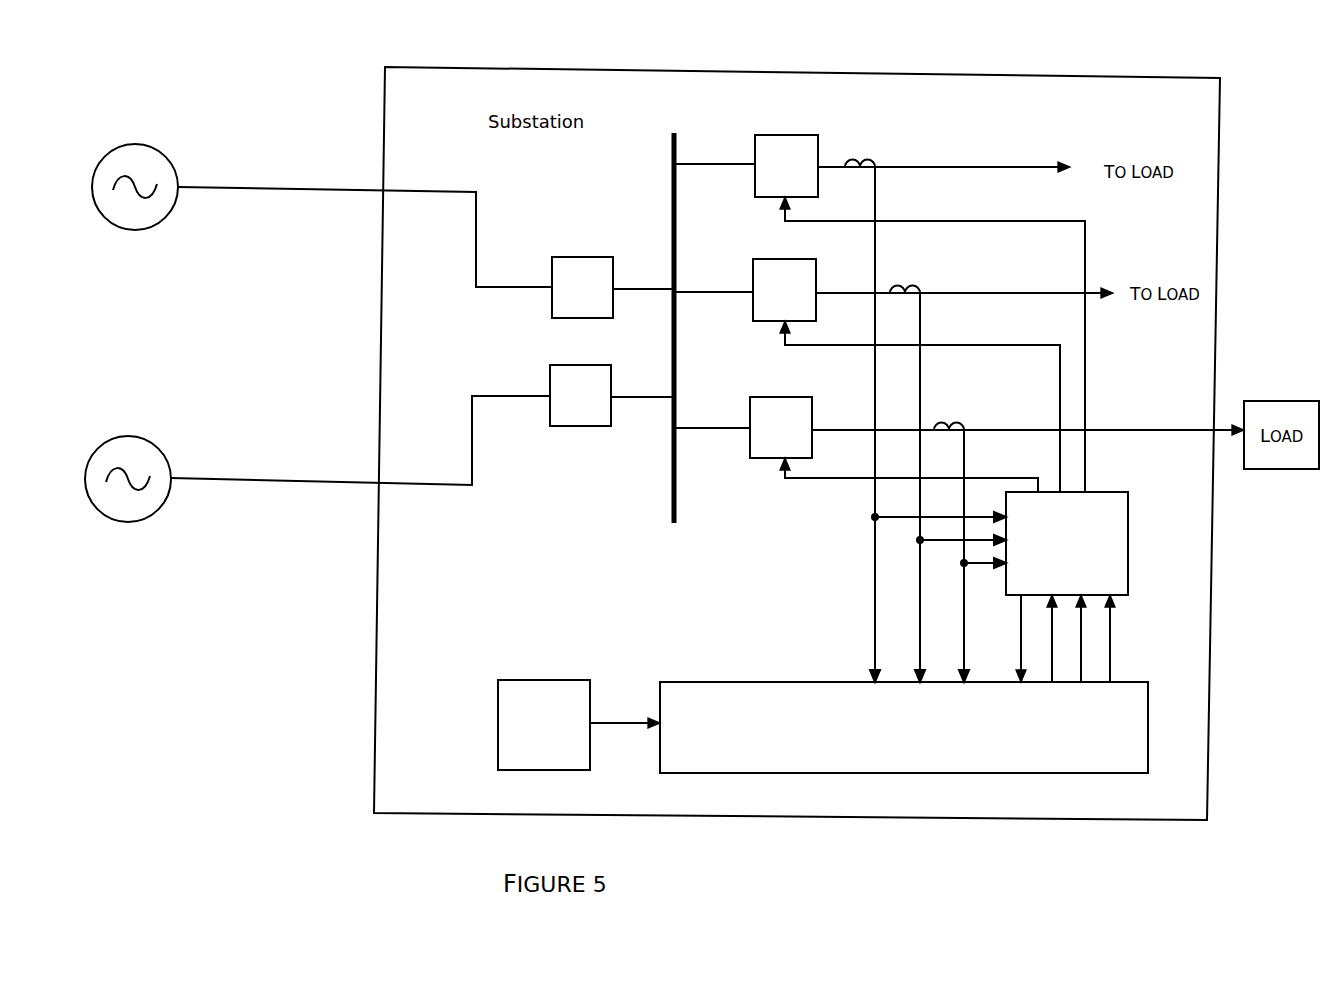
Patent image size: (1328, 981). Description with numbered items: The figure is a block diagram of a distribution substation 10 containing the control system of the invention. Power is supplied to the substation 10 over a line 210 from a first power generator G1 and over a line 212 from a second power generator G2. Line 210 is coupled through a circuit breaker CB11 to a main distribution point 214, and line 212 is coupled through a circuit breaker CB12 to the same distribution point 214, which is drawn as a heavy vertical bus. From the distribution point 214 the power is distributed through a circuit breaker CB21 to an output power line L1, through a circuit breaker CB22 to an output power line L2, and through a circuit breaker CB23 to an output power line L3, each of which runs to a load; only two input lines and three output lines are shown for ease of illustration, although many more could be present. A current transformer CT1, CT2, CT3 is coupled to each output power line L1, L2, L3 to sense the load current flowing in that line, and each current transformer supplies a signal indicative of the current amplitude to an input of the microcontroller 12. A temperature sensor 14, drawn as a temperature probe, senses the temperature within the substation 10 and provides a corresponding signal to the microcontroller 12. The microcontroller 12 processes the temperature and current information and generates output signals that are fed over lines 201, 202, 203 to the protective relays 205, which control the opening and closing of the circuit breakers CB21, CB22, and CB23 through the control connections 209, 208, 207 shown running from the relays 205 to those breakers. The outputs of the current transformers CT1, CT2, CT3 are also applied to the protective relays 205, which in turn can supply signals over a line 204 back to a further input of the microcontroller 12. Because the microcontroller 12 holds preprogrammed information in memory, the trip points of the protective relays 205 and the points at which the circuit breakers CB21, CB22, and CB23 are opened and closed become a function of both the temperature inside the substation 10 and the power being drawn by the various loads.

The distribution substation 10 is at (680, 66).
The microcontroller 12 is at (761, 776).
The temperature sensor 14 is at (538, 690).
The line 201 is at (1110, 622).
The line 202 is at (1081, 647).
The line 203 is at (1052, 671).
The line 204 is at (1021, 640).
The protective relays 205 is at (1130, 531).
The control line to circuit breaker CB23 207 is at (980, 477).
The control line to circuit breaker CB22 208 is at (1000, 344).
The control line to circuit breaker CB21 209 is at (970, 220).
The line 210 is at (416, 191).
The line 212 is at (413, 485).
The main distribution point 214 is at (671, 190).
The first power generator G1 is at (133, 143).
The second power generator G2 is at (131, 436).
The circuit breaker CB11 is at (581, 265).
The circuit breaker CB12 is at (579, 412).
The circuit breaker CB21 is at (793, 136).
The circuit breaker CB22 is at (771, 285).
The circuit breaker CB23 is at (751, 413).
The current transformer CT1 is at (854, 162).
The current transformer CT2 is at (902, 286).
The current transformer CT3 is at (943, 423).
The output power line L1 is at (963, 165).
The output power line L2 is at (971, 290).
The output power line L3 is at (1104, 428).